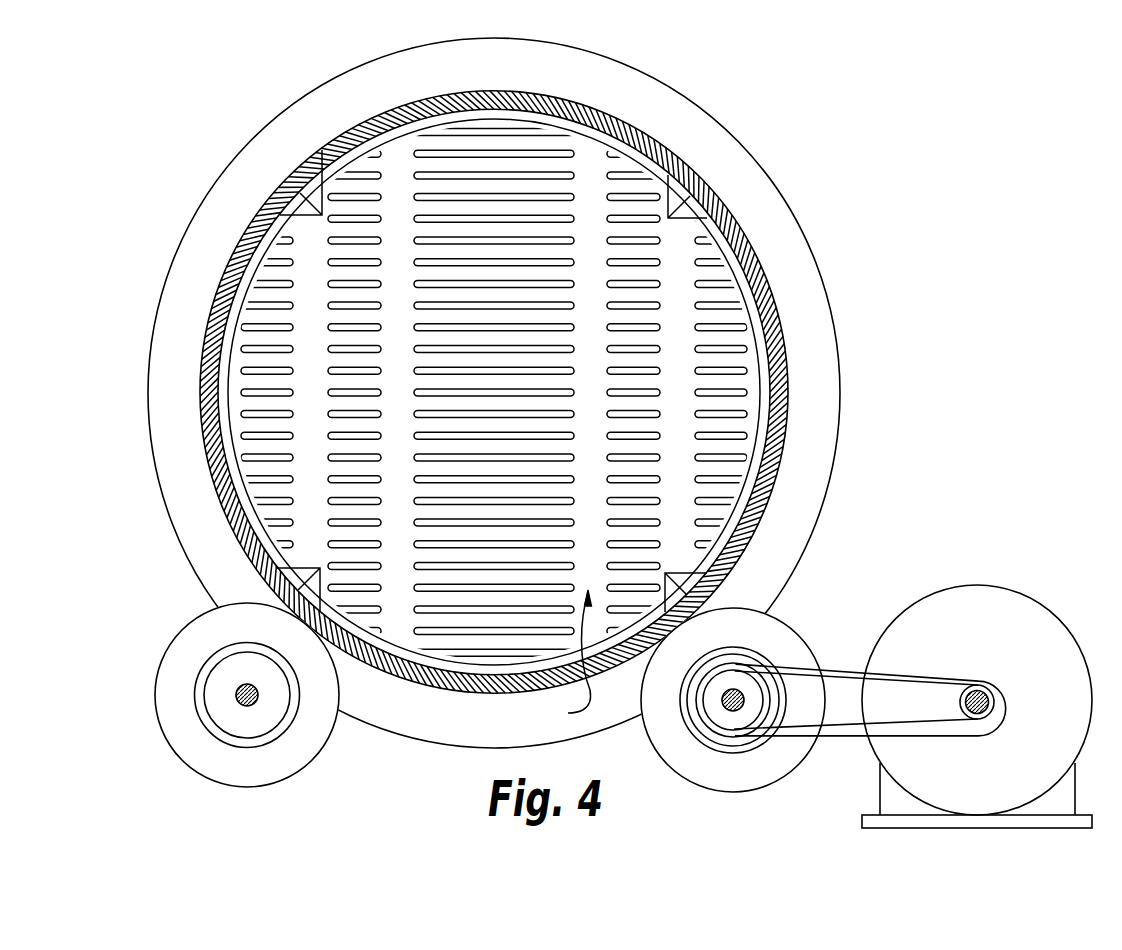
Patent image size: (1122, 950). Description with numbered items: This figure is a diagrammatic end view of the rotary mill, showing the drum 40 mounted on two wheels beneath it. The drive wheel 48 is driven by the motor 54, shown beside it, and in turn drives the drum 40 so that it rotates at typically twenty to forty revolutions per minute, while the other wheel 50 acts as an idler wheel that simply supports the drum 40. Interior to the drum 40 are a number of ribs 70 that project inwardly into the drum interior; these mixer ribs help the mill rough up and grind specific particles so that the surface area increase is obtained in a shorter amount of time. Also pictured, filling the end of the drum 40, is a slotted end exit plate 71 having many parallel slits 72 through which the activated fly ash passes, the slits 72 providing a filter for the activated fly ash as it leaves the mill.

The drum 40 is at (627, 125).
The drive wheel 48 is at (793, 623).
The idler wheel 50 is at (332, 727).
The motor 54 is at (990, 583).
The ribs 70 is at (322, 150).
The slotted end exit plate 71 is at (569, 658).
The slits 72 is at (567, 372).